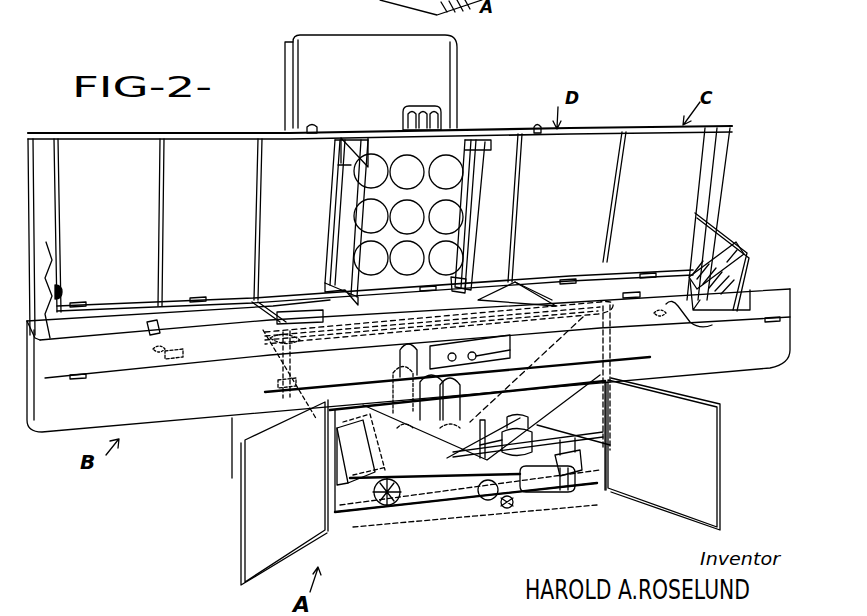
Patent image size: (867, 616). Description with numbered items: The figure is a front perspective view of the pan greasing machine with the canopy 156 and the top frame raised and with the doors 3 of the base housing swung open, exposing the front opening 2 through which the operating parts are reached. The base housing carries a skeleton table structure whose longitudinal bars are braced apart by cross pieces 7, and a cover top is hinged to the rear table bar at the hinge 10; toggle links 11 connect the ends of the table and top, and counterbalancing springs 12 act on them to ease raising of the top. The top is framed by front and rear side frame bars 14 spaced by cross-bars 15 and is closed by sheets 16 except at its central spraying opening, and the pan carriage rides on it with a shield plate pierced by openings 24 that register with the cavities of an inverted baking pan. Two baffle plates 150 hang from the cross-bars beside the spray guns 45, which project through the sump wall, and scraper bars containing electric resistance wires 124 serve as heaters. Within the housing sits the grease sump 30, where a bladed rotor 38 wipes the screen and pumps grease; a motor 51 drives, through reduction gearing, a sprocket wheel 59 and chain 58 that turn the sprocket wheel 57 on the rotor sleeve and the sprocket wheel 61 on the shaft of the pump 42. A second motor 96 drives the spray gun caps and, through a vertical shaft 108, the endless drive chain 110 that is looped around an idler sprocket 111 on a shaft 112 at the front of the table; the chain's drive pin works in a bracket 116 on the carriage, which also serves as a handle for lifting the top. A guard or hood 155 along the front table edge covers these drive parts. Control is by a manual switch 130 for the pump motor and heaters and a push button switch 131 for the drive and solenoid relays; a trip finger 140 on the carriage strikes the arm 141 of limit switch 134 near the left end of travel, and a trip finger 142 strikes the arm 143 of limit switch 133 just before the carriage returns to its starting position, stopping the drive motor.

The front opening 2 is at (580, 410).
The doors 3 is at (244, 560).
The cross pieces 7 is at (637, 297).
The hinge 10 is at (198, 298).
The toggle links 11 is at (59, 282).
The counterbalancing springs 12 is at (49, 278).
The side frame bars 14 is at (597, 128).
The cross-bars 15 is at (61, 197).
The sheets 16 is at (203, 194).
The openings 24 is at (407, 155).
The grease sump 30 is at (372, 498).
The rotor 38 is at (337, 455).
The pump 42 is at (480, 497).
The spray guns 45 is at (397, 369).
The motor 51 is at (565, 476).
The sprocket wheel 57 is at (387, 506).
The chain 58 is at (437, 508).
The sprocket wheel 59 is at (545, 494).
The sprocket wheel 61 is at (509, 509).
The motor 96 is at (550, 423).
The vertical shaft 108 is at (604, 340).
The endless drive chain 110 is at (371, 300).
The idler sprocket 111 is at (282, 346).
The shaft 112 is at (280, 380).
The bracket 116 is at (440, 108).
The electric resistance wires 124 is at (340, 192).
The main switch 130 is at (548, 340).
The push button switch 131 is at (458, 357).
The limit switch 133 is at (662, 320).
The limit switch 134 is at (182, 352).
The trip finger 140 is at (313, 135).
The arm 141 is at (157, 355).
The trip finger 142 is at (541, 128).
The arm 143 is at (683, 318).
The baffle plates 150 is at (348, 216).
The guard or hood 155 is at (50, 382).
The canopy 156 is at (287, 64).